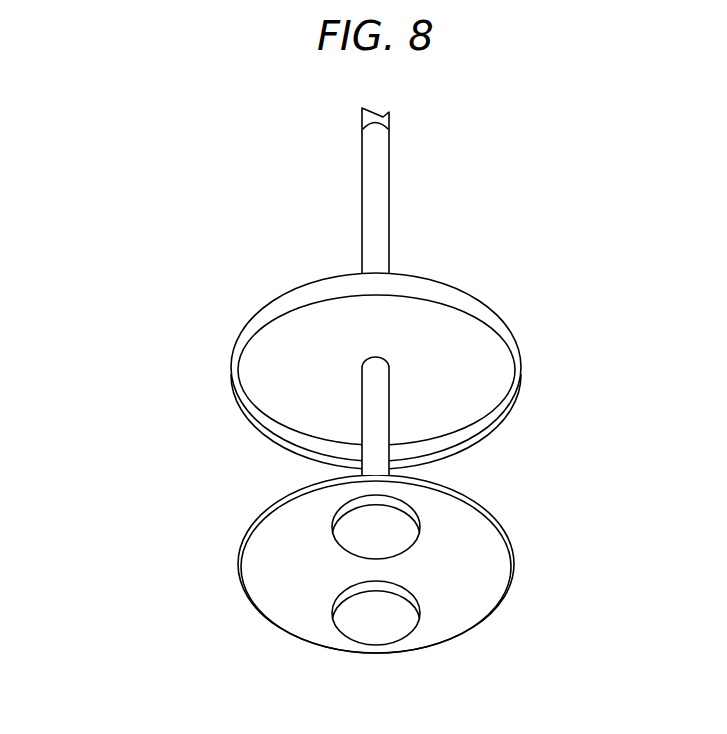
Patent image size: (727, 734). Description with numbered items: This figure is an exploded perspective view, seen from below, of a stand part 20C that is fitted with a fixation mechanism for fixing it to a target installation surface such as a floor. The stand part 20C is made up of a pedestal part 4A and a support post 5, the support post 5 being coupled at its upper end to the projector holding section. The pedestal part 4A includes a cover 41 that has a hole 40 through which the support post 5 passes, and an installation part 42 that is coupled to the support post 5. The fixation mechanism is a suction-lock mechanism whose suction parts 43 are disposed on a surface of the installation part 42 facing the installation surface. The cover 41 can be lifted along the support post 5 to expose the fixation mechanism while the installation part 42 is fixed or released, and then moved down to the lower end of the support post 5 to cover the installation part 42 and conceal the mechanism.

The stand part 20C is at (90, 335).
The support post 5 is at (363, 219).
The pedestal part 4A is at (190, 459).
The hole 40 is at (383, 363).
The cover 41 is at (503, 322).
The installation part 42 is at (503, 532).
The suction parts 43 is at (347, 540).